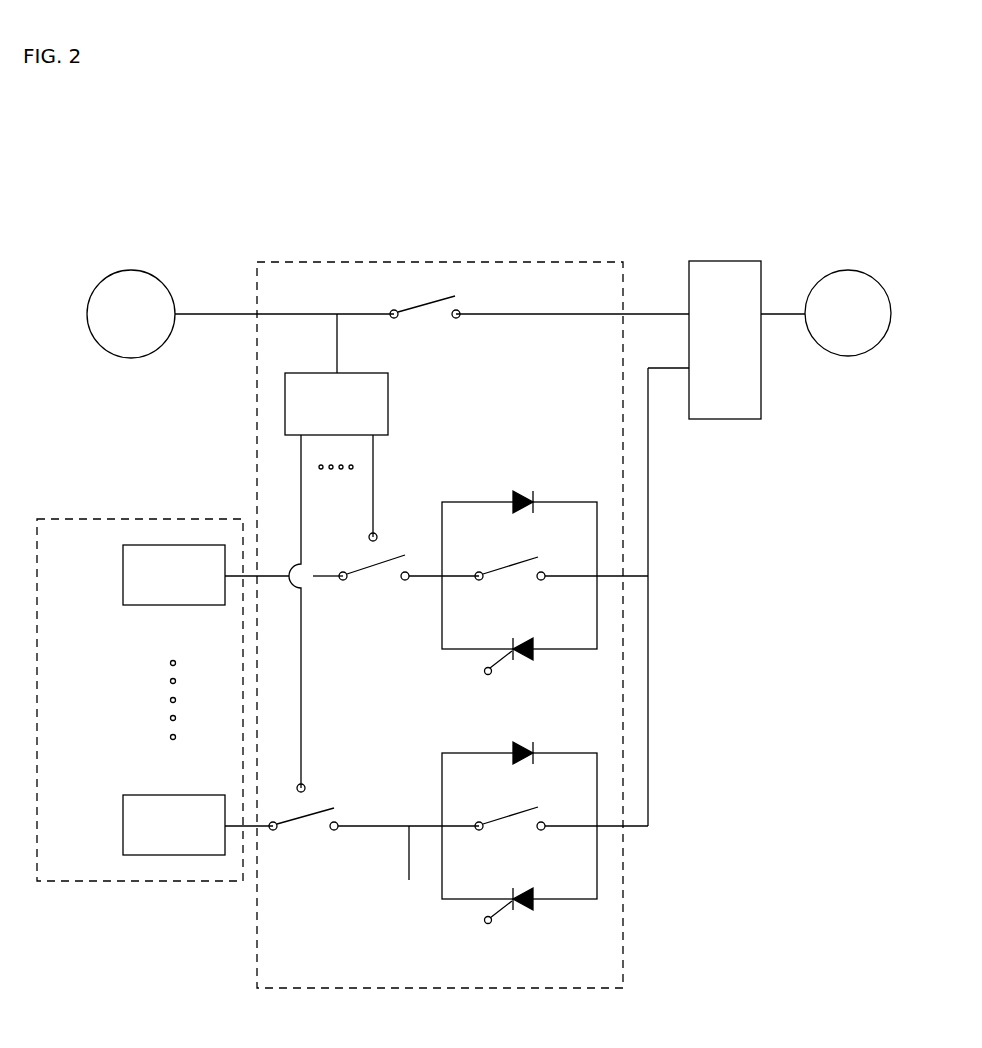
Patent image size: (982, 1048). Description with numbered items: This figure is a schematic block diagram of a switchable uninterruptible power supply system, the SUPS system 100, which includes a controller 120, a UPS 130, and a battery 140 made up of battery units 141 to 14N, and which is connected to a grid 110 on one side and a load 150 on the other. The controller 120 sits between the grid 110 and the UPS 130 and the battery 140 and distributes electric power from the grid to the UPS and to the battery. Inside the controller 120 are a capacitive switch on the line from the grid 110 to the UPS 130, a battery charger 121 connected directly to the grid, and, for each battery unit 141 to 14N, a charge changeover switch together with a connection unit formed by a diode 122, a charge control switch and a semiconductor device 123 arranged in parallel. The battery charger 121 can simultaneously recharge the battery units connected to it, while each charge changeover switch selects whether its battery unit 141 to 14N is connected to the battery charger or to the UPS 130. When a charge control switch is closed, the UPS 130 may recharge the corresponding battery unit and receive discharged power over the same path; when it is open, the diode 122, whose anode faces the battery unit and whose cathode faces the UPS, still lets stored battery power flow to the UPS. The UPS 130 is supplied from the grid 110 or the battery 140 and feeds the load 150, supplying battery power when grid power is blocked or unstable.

The SUPS system 100 is at (162, 125).
The grid 110 is at (142, 270).
The controller 120 is at (512, 262).
The battery charger 121 is at (388, 403).
The diode 122 is at (517, 490).
The semiconductor device 123 is at (526, 657).
The UPS 130 is at (735, 261).
The battery 140 is at (130, 519).
The battery unit 141 is at (123, 576).
The battery unit 14N is at (123, 826).
The load 150 is at (845, 270).